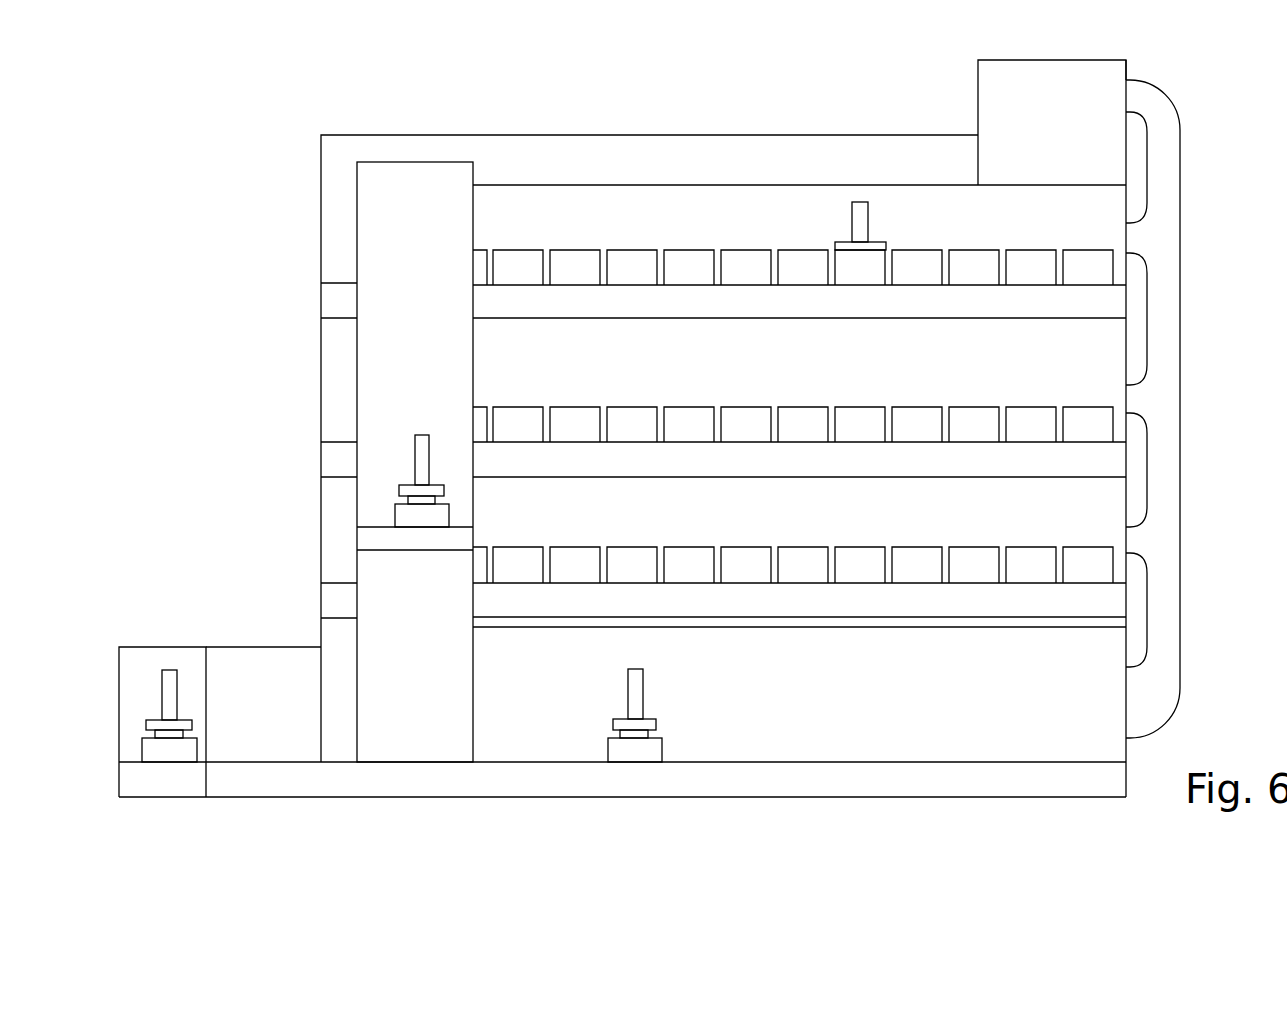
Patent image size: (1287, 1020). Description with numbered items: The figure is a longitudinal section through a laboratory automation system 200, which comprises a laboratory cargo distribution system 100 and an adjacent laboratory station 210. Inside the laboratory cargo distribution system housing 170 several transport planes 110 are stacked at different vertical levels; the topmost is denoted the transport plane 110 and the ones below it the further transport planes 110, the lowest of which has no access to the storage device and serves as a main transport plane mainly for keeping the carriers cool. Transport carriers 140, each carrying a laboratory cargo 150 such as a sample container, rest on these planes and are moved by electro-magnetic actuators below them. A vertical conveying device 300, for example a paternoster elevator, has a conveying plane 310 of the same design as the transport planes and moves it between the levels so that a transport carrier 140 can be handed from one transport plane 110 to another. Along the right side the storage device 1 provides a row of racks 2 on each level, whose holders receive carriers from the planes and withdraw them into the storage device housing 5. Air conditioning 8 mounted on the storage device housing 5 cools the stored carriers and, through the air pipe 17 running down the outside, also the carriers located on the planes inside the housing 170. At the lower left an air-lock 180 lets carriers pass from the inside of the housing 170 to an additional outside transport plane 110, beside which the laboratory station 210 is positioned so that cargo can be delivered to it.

The storage device 1 is at (755, 183).
The rack 2 is at (850, 272).
The storage device housing 5 is at (603, 183).
The air conditioning 8 is at (1061, 123).
The air pipe 17 is at (1176, 408).
The laboratory cargo distribution system 100 is at (295, 268).
The transport plane 110 is at (770, 313).
The transport carrier 140 is at (877, 242).
The laboratory cargo 150 is at (857, 207).
The laboratory cargo distribution system housing 170 is at (320, 168).
The air-lock 180 is at (288, 645).
The laboratory automation system 200 is at (228, 368).
The laboratory station 210 is at (198, 645).
The vertical conveying device 300 is at (373, 396).
The conveying plane 310 is at (373, 528).